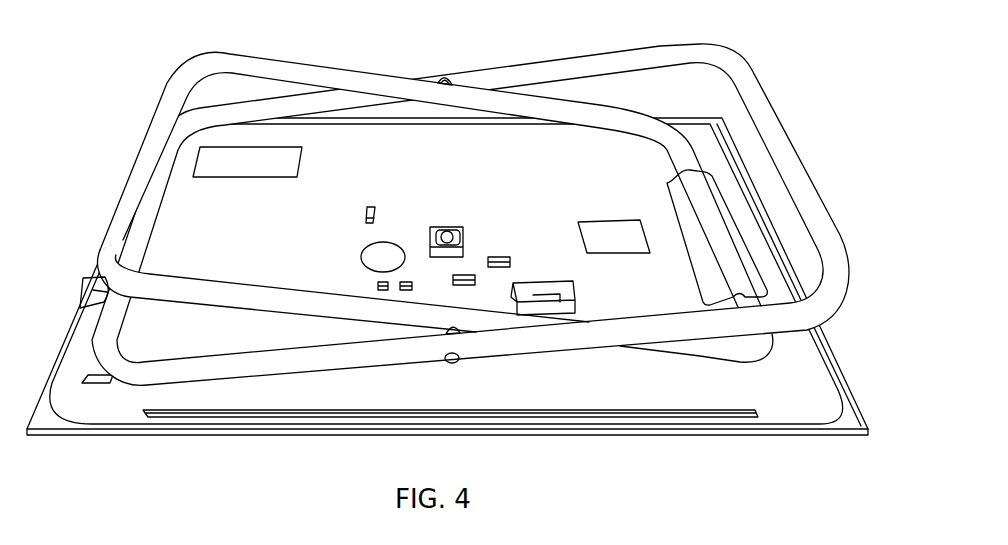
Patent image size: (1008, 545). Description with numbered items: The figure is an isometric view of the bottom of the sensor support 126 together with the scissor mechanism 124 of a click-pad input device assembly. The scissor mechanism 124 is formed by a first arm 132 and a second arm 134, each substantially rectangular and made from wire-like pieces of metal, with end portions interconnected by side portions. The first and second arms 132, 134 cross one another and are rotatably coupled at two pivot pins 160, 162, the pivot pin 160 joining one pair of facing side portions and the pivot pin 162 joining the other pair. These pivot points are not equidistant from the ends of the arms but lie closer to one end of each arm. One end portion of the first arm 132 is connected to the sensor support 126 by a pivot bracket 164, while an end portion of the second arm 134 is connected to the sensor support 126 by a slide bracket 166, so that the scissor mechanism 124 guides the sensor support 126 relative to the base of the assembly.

The scissor mechanism 124 is at (458, 224).
The sensor support 126 is at (827, 383).
The first arm 132 is at (714, 52).
The second arm 134 is at (216, 56).
The pivot pin 160 is at (445, 80).
The pivot pin 162 is at (455, 336).
The pivot bracket 164 is at (100, 289).
The slide bracket 166 is at (747, 257).